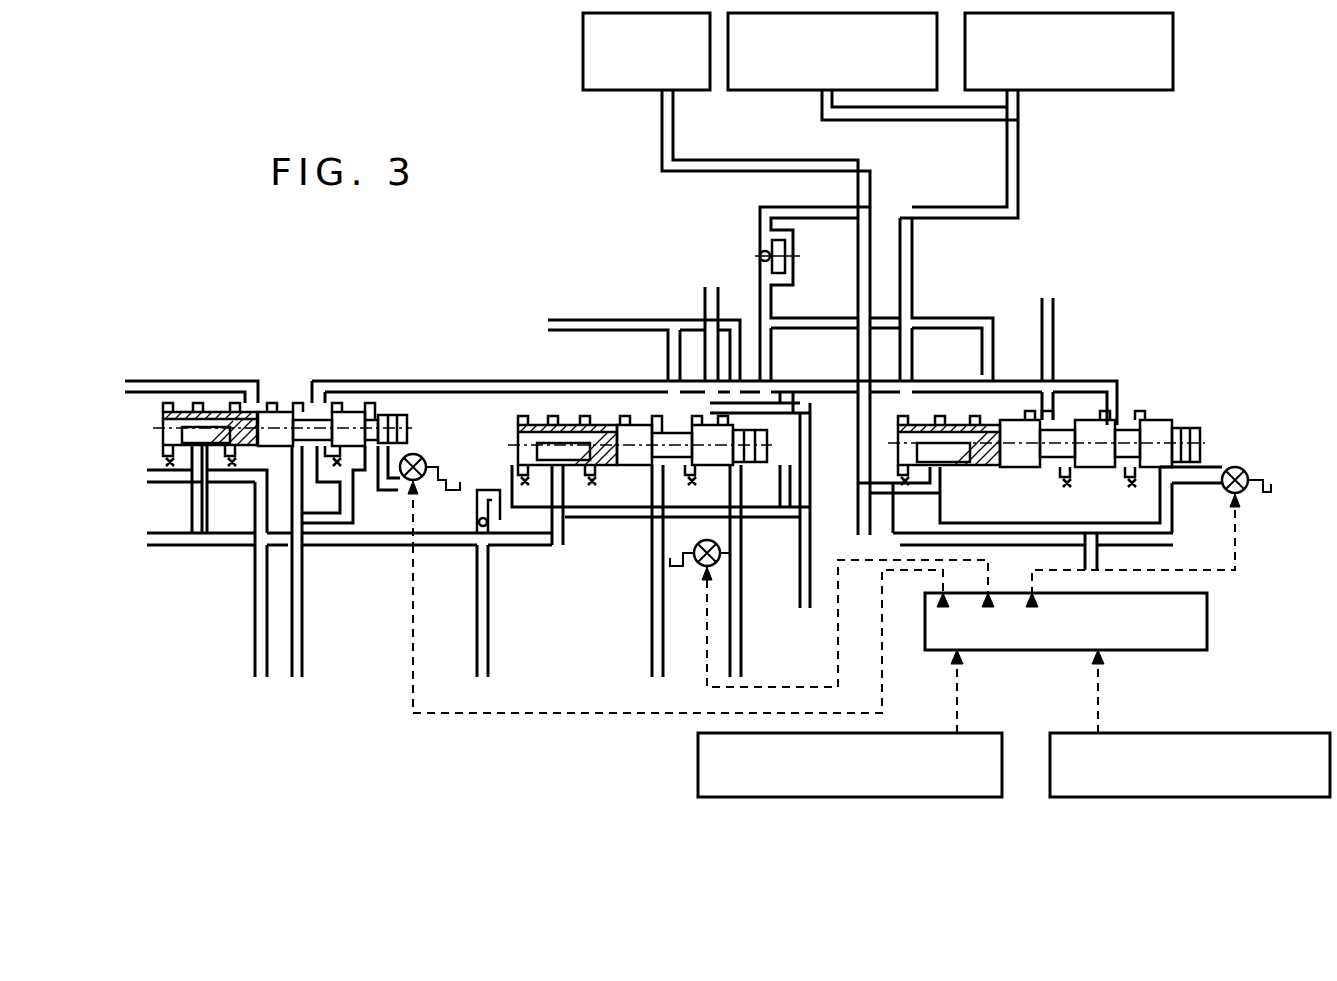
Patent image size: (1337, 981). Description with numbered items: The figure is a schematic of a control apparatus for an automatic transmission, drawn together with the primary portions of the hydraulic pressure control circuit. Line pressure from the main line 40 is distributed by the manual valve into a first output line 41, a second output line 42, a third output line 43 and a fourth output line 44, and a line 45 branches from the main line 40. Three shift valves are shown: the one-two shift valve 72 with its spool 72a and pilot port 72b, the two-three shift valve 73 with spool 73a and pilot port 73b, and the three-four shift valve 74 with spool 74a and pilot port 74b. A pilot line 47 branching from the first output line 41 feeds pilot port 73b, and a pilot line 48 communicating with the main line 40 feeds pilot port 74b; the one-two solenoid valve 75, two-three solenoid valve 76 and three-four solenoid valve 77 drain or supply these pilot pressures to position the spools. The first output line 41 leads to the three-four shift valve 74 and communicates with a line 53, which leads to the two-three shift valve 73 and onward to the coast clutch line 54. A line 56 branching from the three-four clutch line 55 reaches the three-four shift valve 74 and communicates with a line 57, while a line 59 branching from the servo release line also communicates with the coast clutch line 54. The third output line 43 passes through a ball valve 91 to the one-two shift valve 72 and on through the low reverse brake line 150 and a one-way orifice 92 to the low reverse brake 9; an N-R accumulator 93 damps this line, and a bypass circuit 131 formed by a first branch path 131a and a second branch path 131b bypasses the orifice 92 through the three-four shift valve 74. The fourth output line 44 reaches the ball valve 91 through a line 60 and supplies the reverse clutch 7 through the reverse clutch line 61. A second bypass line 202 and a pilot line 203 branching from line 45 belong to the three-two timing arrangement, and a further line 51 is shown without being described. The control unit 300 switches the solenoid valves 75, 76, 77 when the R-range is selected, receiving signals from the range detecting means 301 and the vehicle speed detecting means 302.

The reverse clutch 7 is at (583, 58).
The low reverse brake 9 is at (1150, 90).
The main line 40 is at (985, 535).
The first output line 41 is at (255, 630).
The second output line 42 is at (652, 658).
The third output line 43 is at (488, 656).
The fourth output line 44 is at (800, 575).
The line 45 is at (302, 640).
The pilot line 47 is at (742, 640).
The pilot line 48 is at (1240, 510).
The passage 51 is at (200, 381).
The line 53 is at (794, 380).
The coast clutch line 54 is at (705, 300).
The 3-4 clutch line 55 is at (585, 320).
The line 56 is at (872, 498).
The line 57 is at (1055, 320).
The line 59 is at (445, 381).
The line 60 is at (572, 528).
The reverse clutch line 61 is at (858, 292).
The 1-2 shift valve 72 is at (375, 405).
The spool 72a is at (285, 405).
The pilot port 72b is at (345, 540).
The 2-3 shift valve 73 is at (535, 420).
The spool 73a is at (640, 465).
The pilot port 73b is at (762, 470).
The 3-4 shift valve 74 is at (1165, 408).
The spool 74a is at (1085, 411).
The pilot port 74b is at (1150, 525).
The 1-2 solenoid valve 75 is at (430, 455).
The 2-3 solenoid valve 76 is at (700, 570).
The 3-4 solenoid valve 77 is at (1240, 460).
The ball valve 91 is at (488, 545).
The one-way orifice 92 is at (786, 248).
The N-R accumulator 93 is at (812, 100).
The bypass circuit 131 is at (940, 318).
The first branch path 131a is at (972, 330).
The second branch path 131b is at (913, 270).
The low reverse brake line 150 is at (1018, 155).
The second bypass line 202 is at (226, 548).
The pilot line 203 is at (349, 577).
The control unit 300 is at (1135, 650).
The range detecting means 301 is at (905, 797).
The vehicle speed detecting means 302 is at (1100, 797).